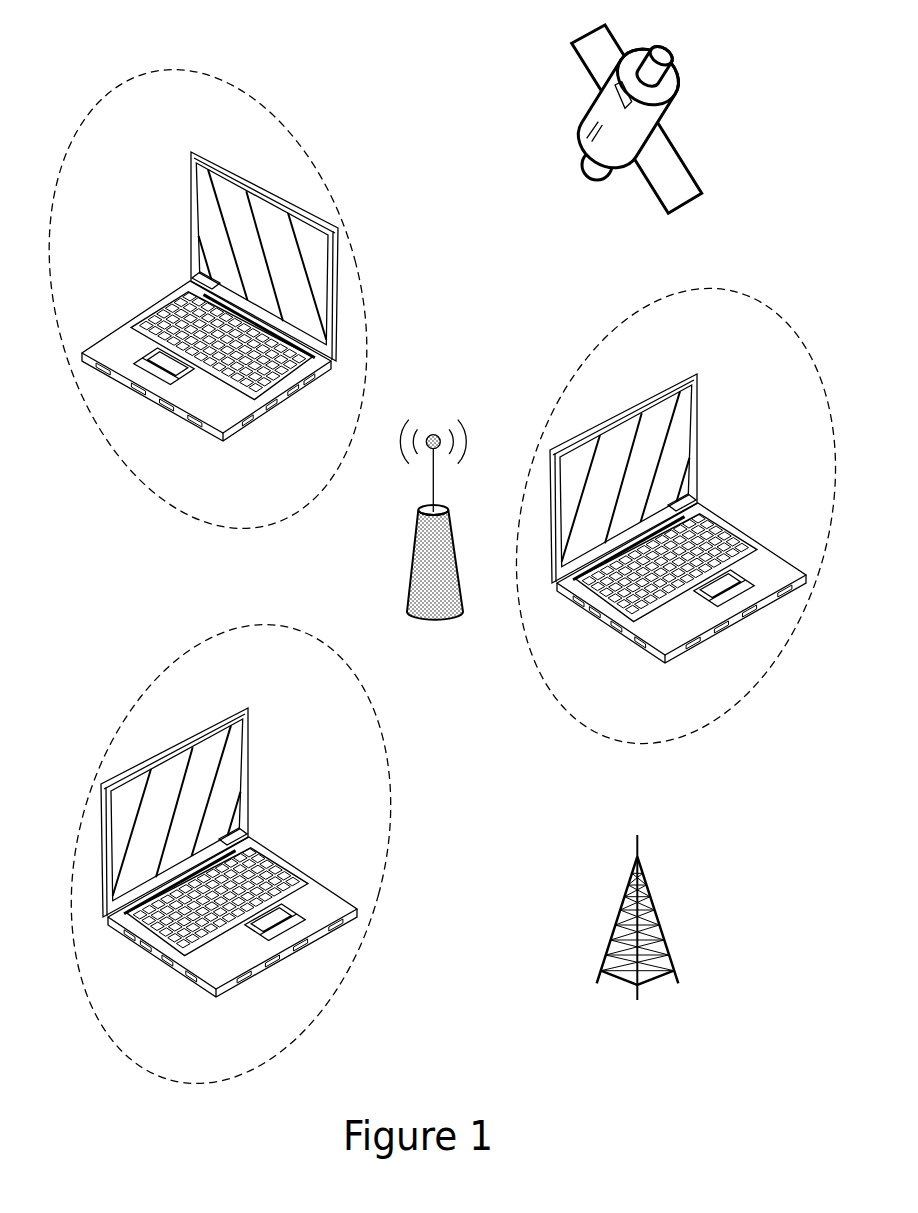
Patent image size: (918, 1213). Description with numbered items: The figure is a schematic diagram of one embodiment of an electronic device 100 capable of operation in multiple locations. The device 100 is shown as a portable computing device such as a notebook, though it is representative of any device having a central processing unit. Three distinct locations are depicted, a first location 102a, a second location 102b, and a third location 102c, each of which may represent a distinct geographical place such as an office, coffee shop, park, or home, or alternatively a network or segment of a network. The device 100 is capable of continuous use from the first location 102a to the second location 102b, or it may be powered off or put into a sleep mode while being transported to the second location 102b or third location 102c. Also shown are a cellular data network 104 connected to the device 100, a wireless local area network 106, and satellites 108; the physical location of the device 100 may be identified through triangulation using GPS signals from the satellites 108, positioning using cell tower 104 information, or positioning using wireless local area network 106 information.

The electronic device 100 is at (270, 194).
The first location 102a is at (270, 108).
The second location 102b is at (623, 320).
The third location 102c is at (384, 732).
The cellular data network 104 is at (657, 927).
The wireless local area network 106 is at (410, 587).
The satellites 108 is at (667, 102).